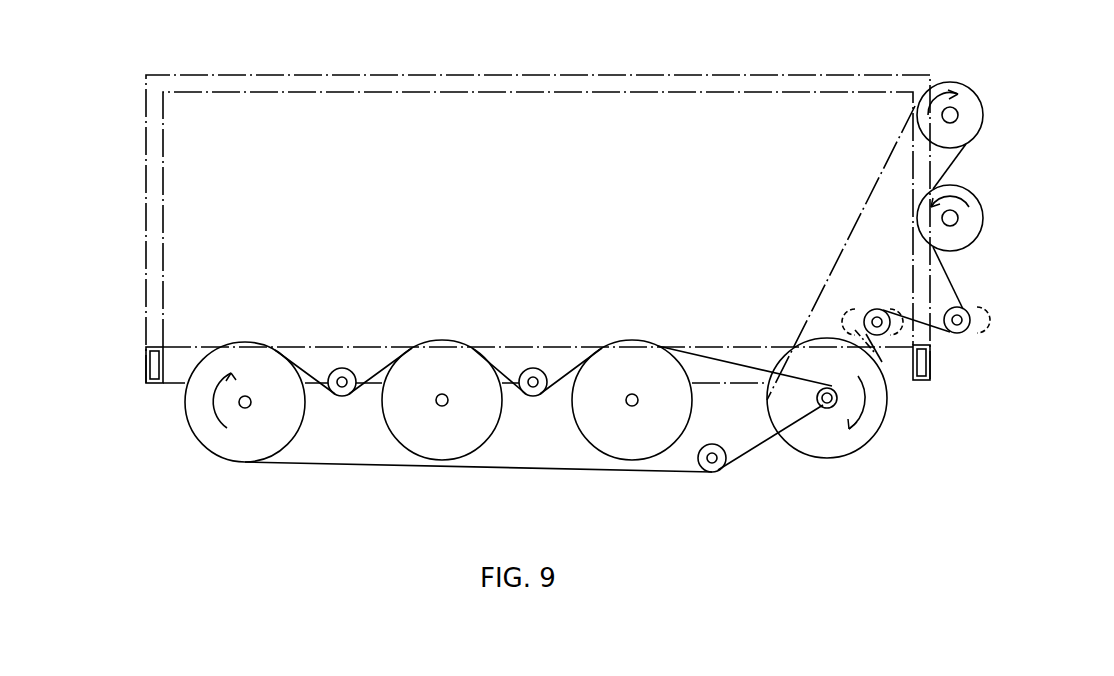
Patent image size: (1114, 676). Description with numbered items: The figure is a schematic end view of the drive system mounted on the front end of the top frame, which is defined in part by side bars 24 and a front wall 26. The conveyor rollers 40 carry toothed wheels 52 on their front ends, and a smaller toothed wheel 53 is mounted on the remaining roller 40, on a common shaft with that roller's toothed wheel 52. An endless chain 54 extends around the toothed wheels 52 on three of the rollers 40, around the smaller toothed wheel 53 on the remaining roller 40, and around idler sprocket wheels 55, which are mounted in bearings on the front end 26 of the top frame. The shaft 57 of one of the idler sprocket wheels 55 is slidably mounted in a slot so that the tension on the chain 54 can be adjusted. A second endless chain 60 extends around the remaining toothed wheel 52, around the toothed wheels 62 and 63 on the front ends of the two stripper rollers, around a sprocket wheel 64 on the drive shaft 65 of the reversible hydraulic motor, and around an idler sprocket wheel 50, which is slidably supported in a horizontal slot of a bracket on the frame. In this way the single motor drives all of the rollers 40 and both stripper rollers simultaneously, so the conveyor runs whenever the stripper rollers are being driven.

The front wall 26 is at (598, 74).
The side bars 24 is at (145, 366).
The toothed wheels 52 is at (258, 355).
The idler sprocket wheels 55 is at (355, 372).
The endless chain 54 is at (492, 468).
The shaft 57 is at (712, 472).
The conveyor rollers 40 is at (868, 428).
The toothed wheel 53 is at (818, 410).
The second endless chain 60 is at (865, 198).
The idler sprocket wheel 50 is at (880, 305).
The toothed wheel 62 is at (985, 117).
The toothed wheel 63 is at (985, 220).
The drive shaft 65 is at (968, 308).
The sprocket wheel 64 is at (972, 320).